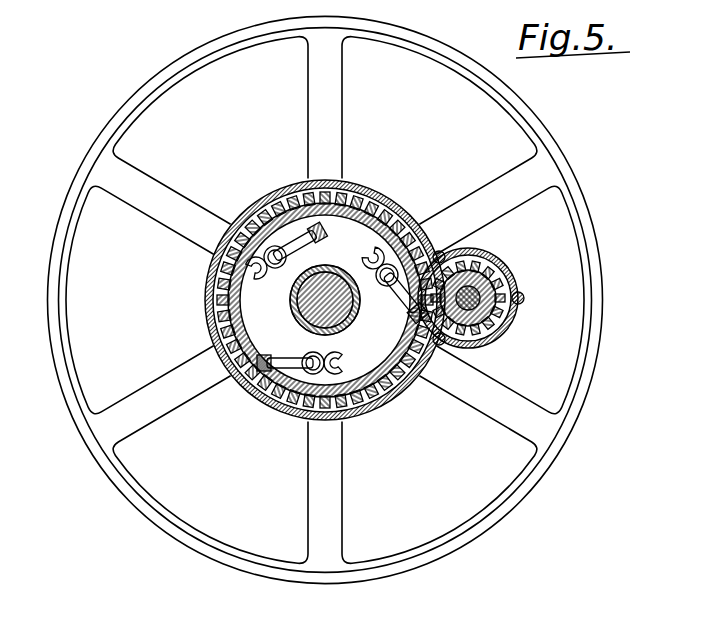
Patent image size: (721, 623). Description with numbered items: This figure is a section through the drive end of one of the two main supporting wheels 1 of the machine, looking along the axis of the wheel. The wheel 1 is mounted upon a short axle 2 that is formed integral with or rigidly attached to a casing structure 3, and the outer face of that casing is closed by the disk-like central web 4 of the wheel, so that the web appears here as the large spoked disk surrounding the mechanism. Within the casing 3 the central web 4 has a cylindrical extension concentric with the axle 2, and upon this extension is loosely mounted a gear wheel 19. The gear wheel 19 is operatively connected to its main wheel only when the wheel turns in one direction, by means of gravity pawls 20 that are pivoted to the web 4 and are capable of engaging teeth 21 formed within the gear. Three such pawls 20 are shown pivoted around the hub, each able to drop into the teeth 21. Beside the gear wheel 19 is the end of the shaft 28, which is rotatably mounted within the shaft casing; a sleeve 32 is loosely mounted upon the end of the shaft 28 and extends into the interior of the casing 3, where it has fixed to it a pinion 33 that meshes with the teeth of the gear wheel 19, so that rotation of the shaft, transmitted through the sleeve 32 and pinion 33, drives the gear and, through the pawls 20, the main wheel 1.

The main supporting wheel 1 is at (516, 103).
The axle 2 is at (348, 316).
The casing structure 3 is at (270, 398).
The central web 4 is at (252, 396).
The gear wheel 19 is at (218, 264).
The gravity pawl 20 is at (321, 238).
The teeth 21 is at (317, 238).
The shaft 28 is at (476, 342).
The sleeve 32 is at (494, 268).
The pinion 33 is at (514, 324).